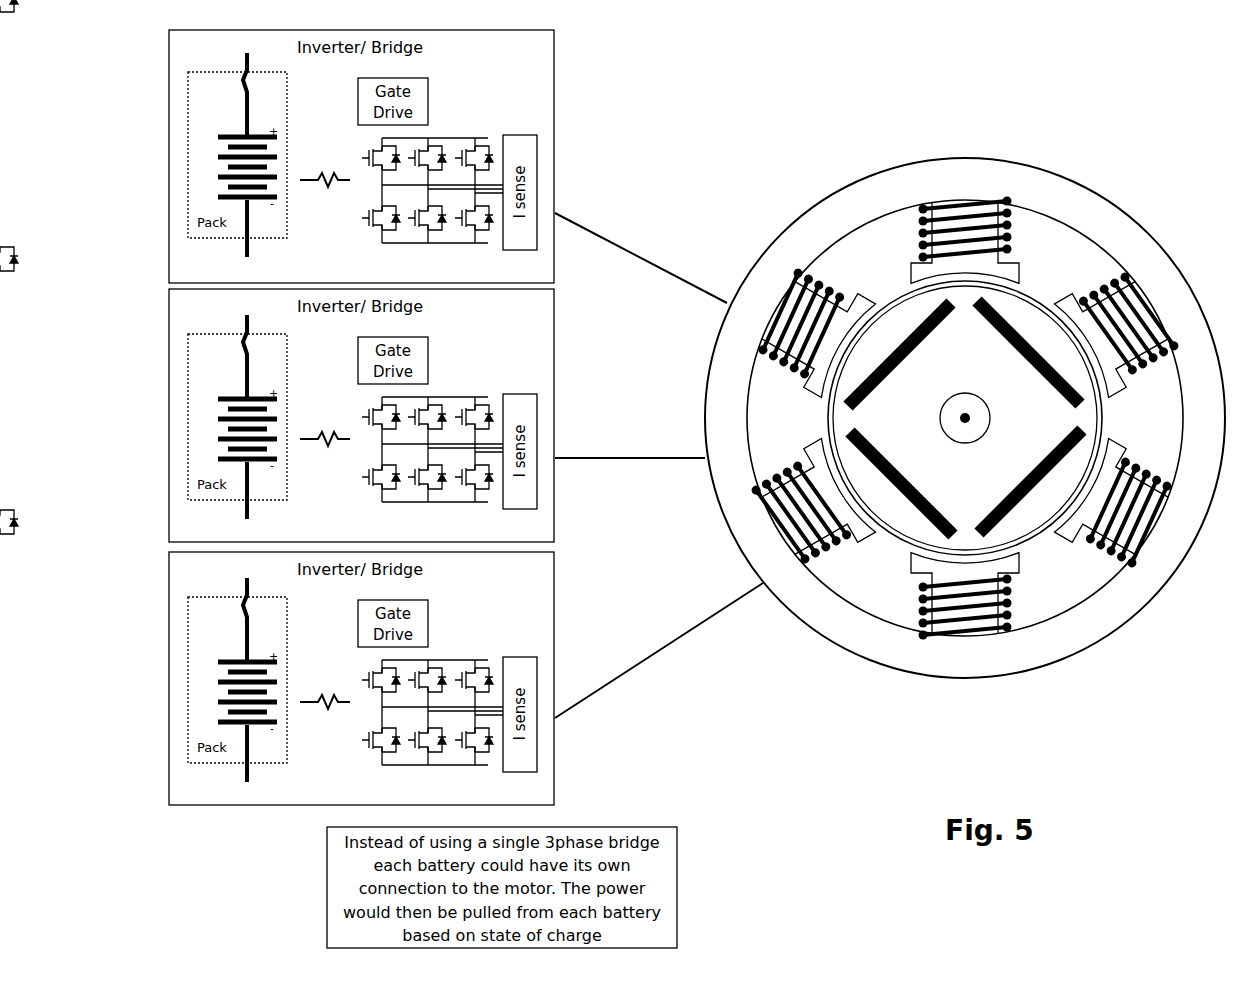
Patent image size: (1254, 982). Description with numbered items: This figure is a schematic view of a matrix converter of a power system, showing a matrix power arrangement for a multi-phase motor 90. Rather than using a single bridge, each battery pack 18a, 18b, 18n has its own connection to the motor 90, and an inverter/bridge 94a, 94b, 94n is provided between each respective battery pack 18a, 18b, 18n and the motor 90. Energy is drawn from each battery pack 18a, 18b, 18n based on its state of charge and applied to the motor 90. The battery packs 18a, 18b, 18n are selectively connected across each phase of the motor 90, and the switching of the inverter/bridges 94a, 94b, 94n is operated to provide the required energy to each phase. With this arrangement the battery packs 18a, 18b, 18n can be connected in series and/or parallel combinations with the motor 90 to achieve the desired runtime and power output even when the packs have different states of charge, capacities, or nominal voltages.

The battery pack 18a is at (188, 140).
The battery pack 18b is at (190, 413).
The battery pack 18n is at (190, 693).
The inverter/bridge 94a is at (555, 90).
The inverter/bridge 94b is at (555, 374).
The inverter/bridge 94n is at (555, 625).
The multi-phase motor 90 is at (1085, 167).